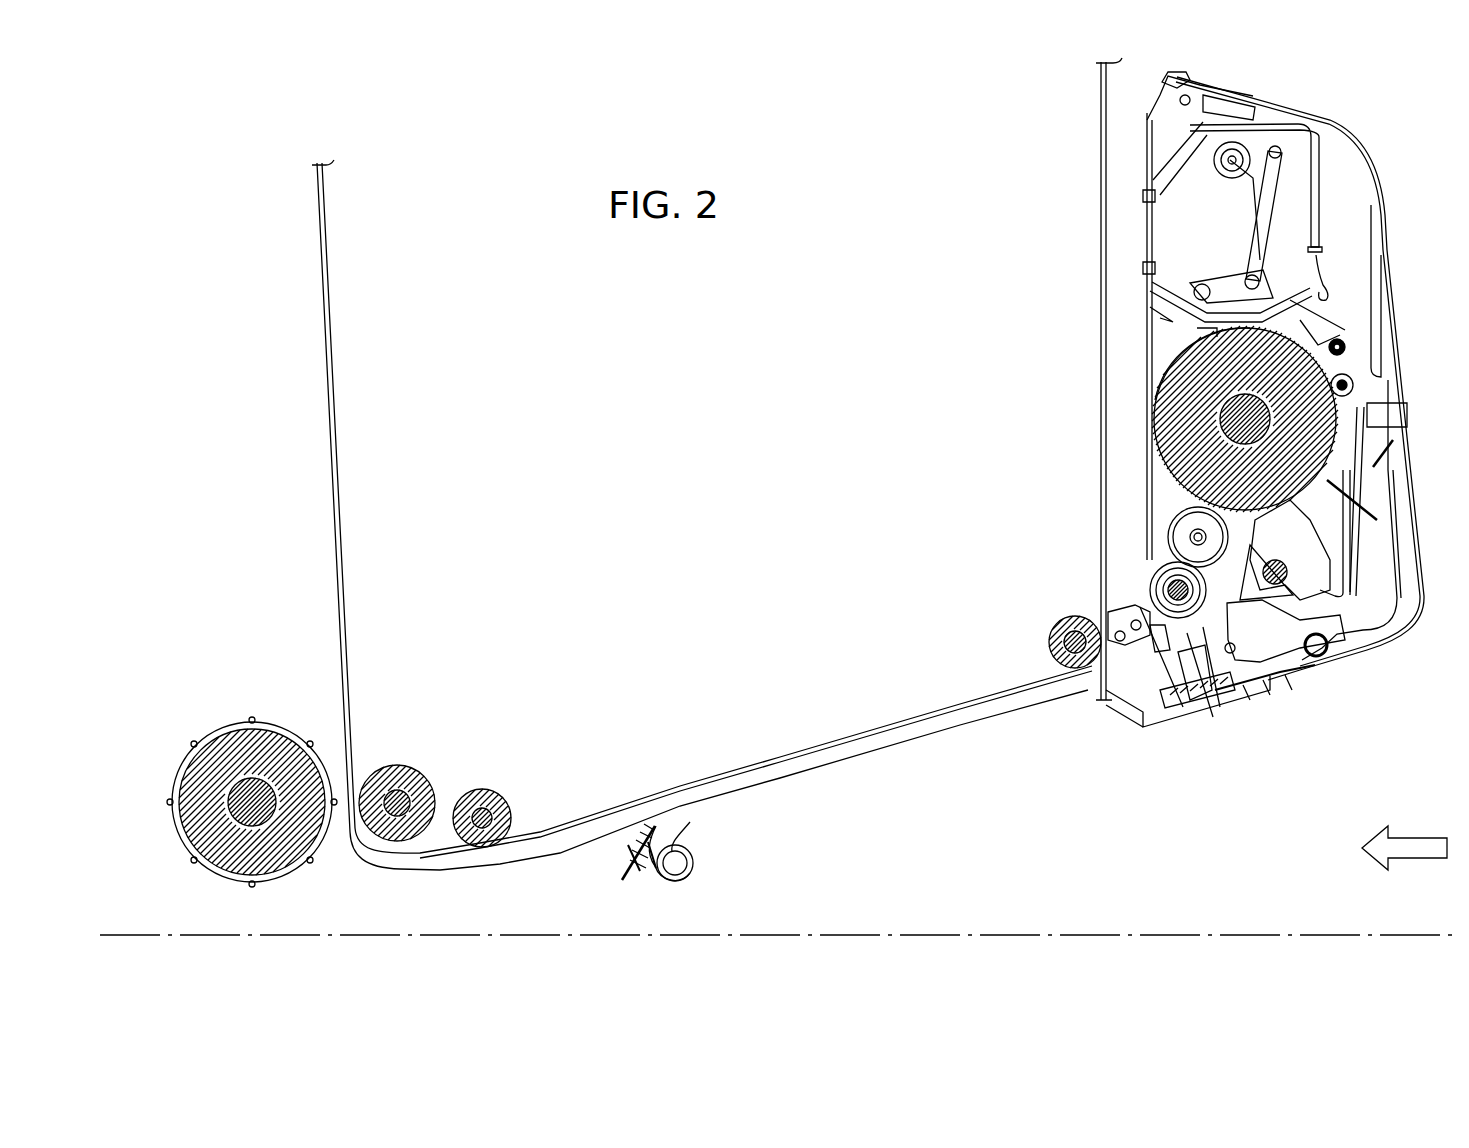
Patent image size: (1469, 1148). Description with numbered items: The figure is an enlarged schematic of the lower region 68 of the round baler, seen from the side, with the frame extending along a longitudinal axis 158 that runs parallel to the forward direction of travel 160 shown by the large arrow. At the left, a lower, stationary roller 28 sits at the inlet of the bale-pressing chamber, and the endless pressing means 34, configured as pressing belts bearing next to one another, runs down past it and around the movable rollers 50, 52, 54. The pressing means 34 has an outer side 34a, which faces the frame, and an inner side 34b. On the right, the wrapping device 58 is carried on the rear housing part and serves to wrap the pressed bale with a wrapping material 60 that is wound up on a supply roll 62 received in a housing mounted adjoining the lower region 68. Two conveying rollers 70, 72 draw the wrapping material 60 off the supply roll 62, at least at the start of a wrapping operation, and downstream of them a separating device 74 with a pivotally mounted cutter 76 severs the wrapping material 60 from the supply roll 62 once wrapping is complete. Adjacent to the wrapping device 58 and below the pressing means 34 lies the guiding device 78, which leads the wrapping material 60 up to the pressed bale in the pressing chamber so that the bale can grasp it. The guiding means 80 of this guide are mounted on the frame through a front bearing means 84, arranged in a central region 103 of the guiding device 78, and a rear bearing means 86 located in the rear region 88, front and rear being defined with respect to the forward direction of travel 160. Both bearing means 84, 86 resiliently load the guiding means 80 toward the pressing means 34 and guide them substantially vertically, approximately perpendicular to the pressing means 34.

The lower, stationary roller 28 is at (245, 722).
The pressing means 34 is at (330, 281).
The outer side 34a is at (302, 384).
The inner side 34b is at (367, 377).
The movable roller 50 is at (1049, 641).
The movable roller 52 is at (489, 790).
The movable roller 54 is at (400, 766).
The wrapping device 58 is at (1303, 238).
The wrapping material 60 is at (1190, 440).
The supply roll 62 is at (1173, 351).
The lower region 68 is at (983, 746).
The conveying roller 70 is at (1165, 522).
The conveying roller 72 is at (1157, 565).
The separating device 74 is at (1140, 727).
The cutter 76 is at (1128, 622).
The guiding device 78 is at (908, 776).
The guiding means 80 is at (828, 757).
The front bearing means 84 is at (717, 862).
The rear bearing means 86 is at (1200, 734).
The rear region 88 is at (1245, 730).
The central region 103 is at (636, 762).
The longitudinal axis 158 is at (1158, 935).
The forward direction of travel 160 is at (1422, 846).